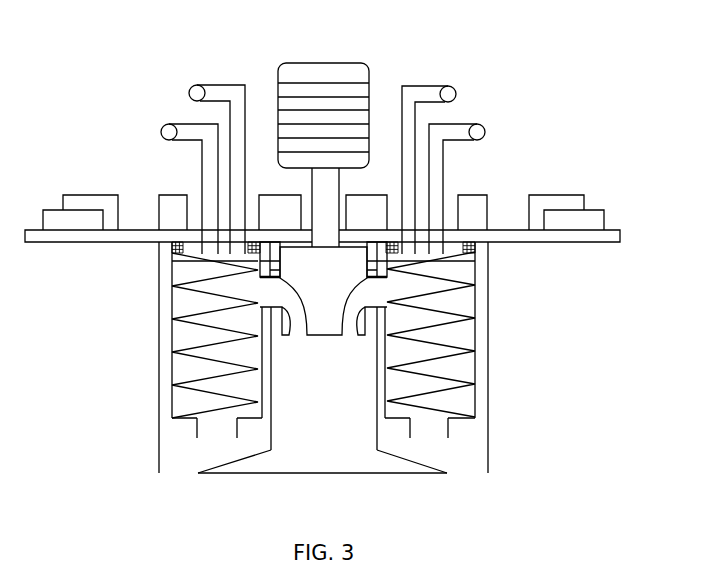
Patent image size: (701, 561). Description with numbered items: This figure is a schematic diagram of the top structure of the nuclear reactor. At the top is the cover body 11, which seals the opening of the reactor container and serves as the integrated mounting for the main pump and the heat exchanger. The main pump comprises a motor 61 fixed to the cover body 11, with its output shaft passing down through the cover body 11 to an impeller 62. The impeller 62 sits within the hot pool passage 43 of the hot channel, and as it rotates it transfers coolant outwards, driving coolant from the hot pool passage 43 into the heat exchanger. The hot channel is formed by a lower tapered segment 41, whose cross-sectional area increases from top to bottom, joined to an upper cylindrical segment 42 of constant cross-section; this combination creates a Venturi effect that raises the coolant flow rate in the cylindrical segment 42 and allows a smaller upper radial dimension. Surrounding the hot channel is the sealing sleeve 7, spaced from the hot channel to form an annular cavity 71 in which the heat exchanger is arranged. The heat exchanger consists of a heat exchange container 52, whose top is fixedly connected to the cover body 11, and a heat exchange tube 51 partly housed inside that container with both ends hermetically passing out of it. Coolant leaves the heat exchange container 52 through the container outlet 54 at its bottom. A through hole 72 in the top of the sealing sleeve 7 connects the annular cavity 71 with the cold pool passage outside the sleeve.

The cover body 11 is at (93, 243).
The motor 61 is at (323, 63).
The impeller 62 is at (320, 336).
The sealing sleeve 7 is at (488, 370).
The annular cavity 71 is at (480, 330).
The through hole 72 is at (487, 298).
The heat exchange container 52 is at (173, 341).
The heat exchange tube 51 is at (187, 390).
The container outlet 54 is at (437, 428).
The cylindrical segment 42 is at (271, 410).
The tapered segment 41 is at (413, 460).
The hot pool passage 43 is at (285, 460).